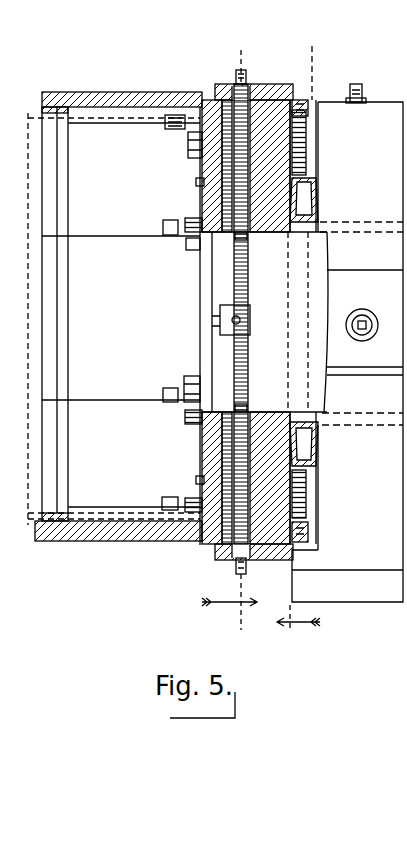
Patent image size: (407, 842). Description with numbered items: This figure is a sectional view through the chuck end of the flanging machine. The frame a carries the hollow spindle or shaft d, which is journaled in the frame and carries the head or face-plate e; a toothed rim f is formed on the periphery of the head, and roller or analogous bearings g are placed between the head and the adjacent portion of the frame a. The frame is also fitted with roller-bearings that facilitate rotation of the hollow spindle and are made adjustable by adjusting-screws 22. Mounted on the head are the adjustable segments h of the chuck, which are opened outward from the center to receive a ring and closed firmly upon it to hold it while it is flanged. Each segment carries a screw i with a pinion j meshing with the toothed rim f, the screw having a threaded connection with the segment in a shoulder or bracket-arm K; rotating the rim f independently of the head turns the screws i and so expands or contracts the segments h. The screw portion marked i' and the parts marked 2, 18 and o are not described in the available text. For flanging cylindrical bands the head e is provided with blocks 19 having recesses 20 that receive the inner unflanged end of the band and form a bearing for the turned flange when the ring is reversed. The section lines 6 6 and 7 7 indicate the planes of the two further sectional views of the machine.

The clamping block 2 is at (280, 92).
The section line 6 6 is at (229, 343).
The section line 7 7 is at (298, 352).
The guide piece 18 is at (176, 127).
The blocks 19 is at (188, 150).
The recesses 20 is at (186, 118).
The adjusting-screws 22 is at (366, 209).
The frame a is at (371, 496).
The hollow spindle or shaft d is at (347, 352).
The head or face-plate e is at (271, 397).
The toothed rim f is at (306, 108).
The roller bearings g is at (316, 192).
The segments h is at (115, 318).
The screw i is at (247, 340).
The spindle collar i' is at (246, 408).
The pinion j is at (220, 96).
The shoulder or bracket-arm K is at (200, 182).
The threaded bushing o is at (306, 155).